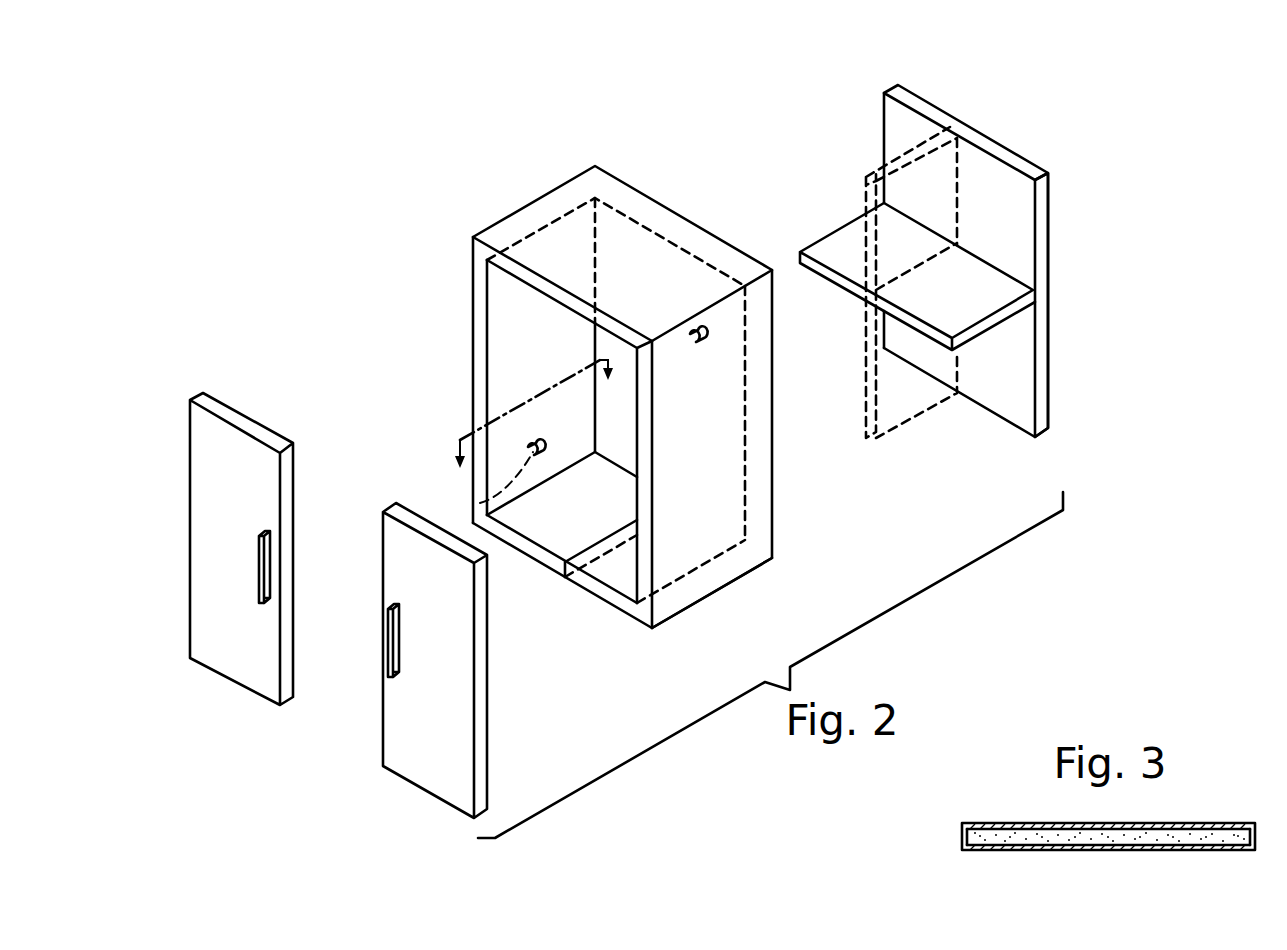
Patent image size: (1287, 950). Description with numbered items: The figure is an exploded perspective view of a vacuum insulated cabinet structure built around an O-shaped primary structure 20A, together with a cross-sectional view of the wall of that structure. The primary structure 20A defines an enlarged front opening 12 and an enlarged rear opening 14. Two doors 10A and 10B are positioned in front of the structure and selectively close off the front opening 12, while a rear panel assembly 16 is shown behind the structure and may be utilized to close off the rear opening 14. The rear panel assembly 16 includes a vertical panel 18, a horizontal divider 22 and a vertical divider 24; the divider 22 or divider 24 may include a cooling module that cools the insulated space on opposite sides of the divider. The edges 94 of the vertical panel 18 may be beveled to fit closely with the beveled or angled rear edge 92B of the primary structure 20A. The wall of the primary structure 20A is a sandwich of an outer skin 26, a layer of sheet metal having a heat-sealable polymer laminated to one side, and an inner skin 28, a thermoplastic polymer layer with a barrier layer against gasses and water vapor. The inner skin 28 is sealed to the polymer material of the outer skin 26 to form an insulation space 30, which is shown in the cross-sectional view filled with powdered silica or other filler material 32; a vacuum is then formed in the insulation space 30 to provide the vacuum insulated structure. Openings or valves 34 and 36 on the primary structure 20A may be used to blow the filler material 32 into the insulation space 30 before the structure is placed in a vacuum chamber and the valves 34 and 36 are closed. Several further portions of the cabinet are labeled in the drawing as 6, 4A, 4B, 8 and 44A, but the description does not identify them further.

In FIG. 2, the primary structure 20A is at (534, 198).
In FIG. 2, the top wall 6 is at (668, 215).
In FIG. 2, the left side wall 4A is at (473, 363).
In FIG. 2, the right side wall 4B is at (768, 432).
In FIG. 2, the bottom wall 8 is at (616, 618).
In FIG. 2, the front opening 12 is at (500, 400).
In FIG. 2, the rear opening 14 is at (630, 450).
In FIG. 2, the outer skin 26 is at (718, 573).
In FIG. 3, the outer skin 26 is at (1170, 823).
In FIG. 2, the angled rear edge 92B is at (773, 531).
In FIG. 2, the bottom panel 44A is at (560, 545).
In FIG. 2, the opening or valve 34 is at (712, 342).
In FIG. 2, the opening or valve 36 is at (480, 503).
In FIG. 2, the rear panel assembly 16 is at (993, 132).
In FIG. 2, the vertical panel 18 is at (1042, 391).
In FIG. 2, the edges 94 is at (1042, 243).
In FIG. 2, the horizontal divider 22 is at (824, 233).
In FIG. 2, the vertical divider 24 is at (863, 172).
In FIG. 2, the door 10A is at (228, 660).
In FIG. 2, the door 10B is at (431, 781).
In FIG. 3, the filler material 32 is at (1042, 835).
In FIG. 3, the inner skin 28 is at (1077, 850).
In FIG. 3, the insulation space 30 is at (1205, 836).